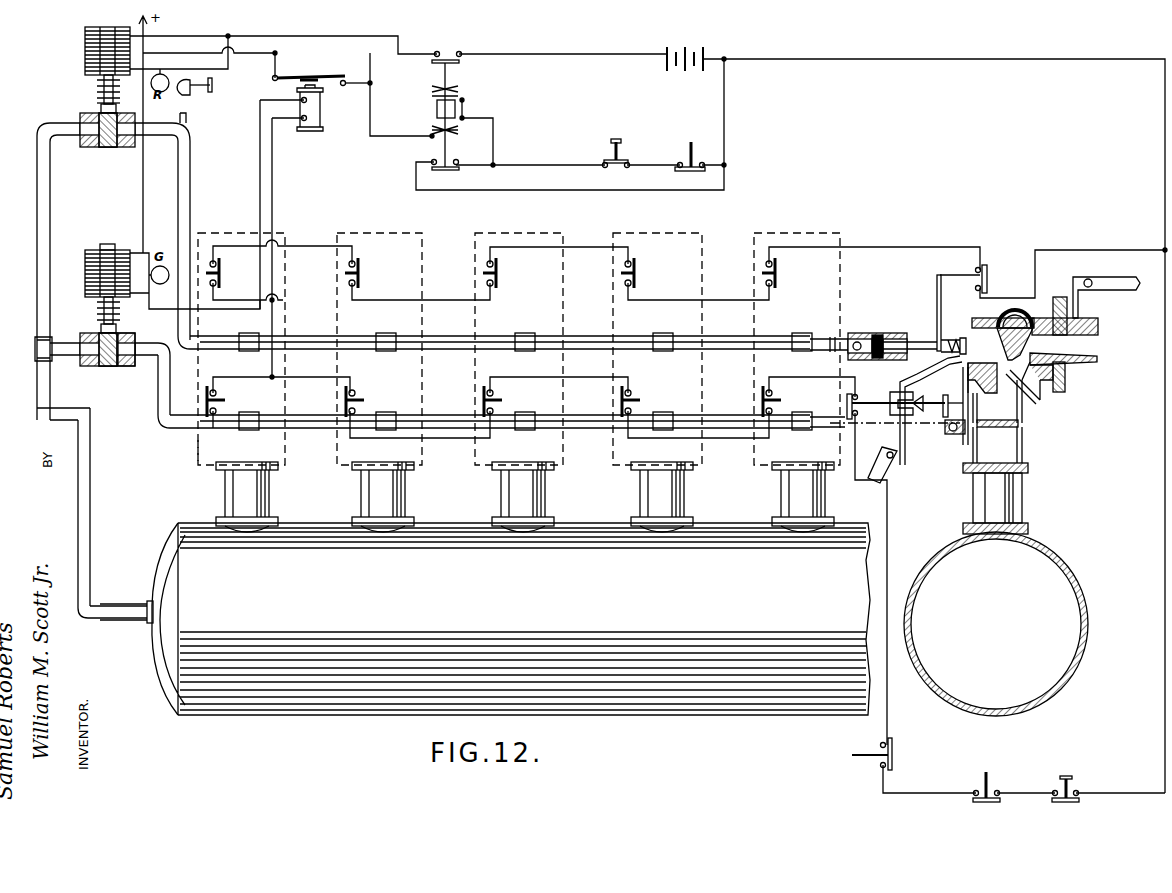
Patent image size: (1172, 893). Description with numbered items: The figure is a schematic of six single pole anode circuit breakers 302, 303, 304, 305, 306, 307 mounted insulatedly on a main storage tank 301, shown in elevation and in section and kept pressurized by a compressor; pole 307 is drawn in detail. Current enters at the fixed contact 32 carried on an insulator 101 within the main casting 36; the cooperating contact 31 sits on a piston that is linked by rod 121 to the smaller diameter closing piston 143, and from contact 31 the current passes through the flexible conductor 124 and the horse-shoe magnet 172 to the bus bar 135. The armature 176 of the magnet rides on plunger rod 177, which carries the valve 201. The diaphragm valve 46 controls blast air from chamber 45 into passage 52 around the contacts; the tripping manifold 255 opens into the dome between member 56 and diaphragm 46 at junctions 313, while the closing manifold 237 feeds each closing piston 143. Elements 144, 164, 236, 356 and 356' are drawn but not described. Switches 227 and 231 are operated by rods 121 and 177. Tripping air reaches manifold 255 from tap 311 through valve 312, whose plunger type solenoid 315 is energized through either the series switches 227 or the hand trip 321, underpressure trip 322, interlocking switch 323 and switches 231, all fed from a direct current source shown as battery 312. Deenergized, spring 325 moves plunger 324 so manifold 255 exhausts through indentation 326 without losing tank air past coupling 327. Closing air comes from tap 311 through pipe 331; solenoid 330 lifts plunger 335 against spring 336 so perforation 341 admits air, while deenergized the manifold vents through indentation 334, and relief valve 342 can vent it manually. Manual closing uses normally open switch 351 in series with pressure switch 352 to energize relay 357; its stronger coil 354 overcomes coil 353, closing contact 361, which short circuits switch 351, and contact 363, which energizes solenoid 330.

The main storage tank 301 is at (511, 619).
The single pole circuit breaker 302 is at (196, 440).
The single pole circuit breaker 303 is at (345, 462).
The single pole circuit breaker 304 is at (485, 462).
The single pole circuit breaker 305 is at (623, 462).
The single pole circuit breaker 306 is at (763, 462).
The circuit breaker pole 307 is at (963, 473).
The tap 311 is at (146, 606).
The electromagnetically operated valve 312 is at (693, 47).
The junction 313 is at (250, 430).
The plunger type solenoid 315 is at (85, 250).
The hand trip switch 321 is at (1080, 800).
The underpressure automatic trip switch 322 is at (974, 800).
The interlocking switch 323 is at (892, 758).
The plunger 324 is at (100, 326).
The spring 325 is at (97, 306).
The indentation 326 is at (115, 331).
The coupling 327 is at (92, 356).
The solenoid 330 is at (85, 36).
The pipe 331 is at (37, 262).
The indentation 334 is at (118, 110).
The solenoid plunger 335 is at (96, 100).
The spring 336 is at (97, 83).
The perforation 341 is at (84, 142).
The relief valve 342 is at (190, 88).
The manual closing switch 351 is at (628, 132).
The pressure switch 352 is at (700, 140).
The relay coil 353 is at (432, 128).
The relay coil 354 is at (452, 90).
The switch blade 356 is at (314, 70).
The switch contact 356' is at (299, 69).
The relay 357 is at (431, 111).
The relay contact 361 is at (452, 172).
The relay contact 363 is at (450, 60).
The switch 227 is at (990, 266).
The switch 231 is at (846, 398).
The lever 236 is at (1122, 270).
The closing manifold 237 is at (826, 325).
The tripping manifold 255 is at (840, 427).
The smaller diameter piston 143 is at (877, 336).
The rod 121 is at (905, 340).
The bar 164 is at (955, 338).
The flexible conductor 124 is at (928, 373).
The horse-shoe magnet 172 is at (896, 392).
The plunger rod 177 is at (880, 396).
The armature 176 is at (921, 412).
The valve 201 is at (945, 396).
The bus bar 135 is at (896, 475).
The dome shaped member 56 is at (958, 436).
The cooperating contact 31 is at (1003, 335).
The contact 32 is at (1085, 356).
The insulator 101 is at (1065, 380).
The passage 144 is at (1030, 390).
The passage 52 is at (999, 392).
The main casting 36 is at (1019, 421).
The diaphragm valve 46 is at (979, 431).
The chamber 45 is at (995, 484).